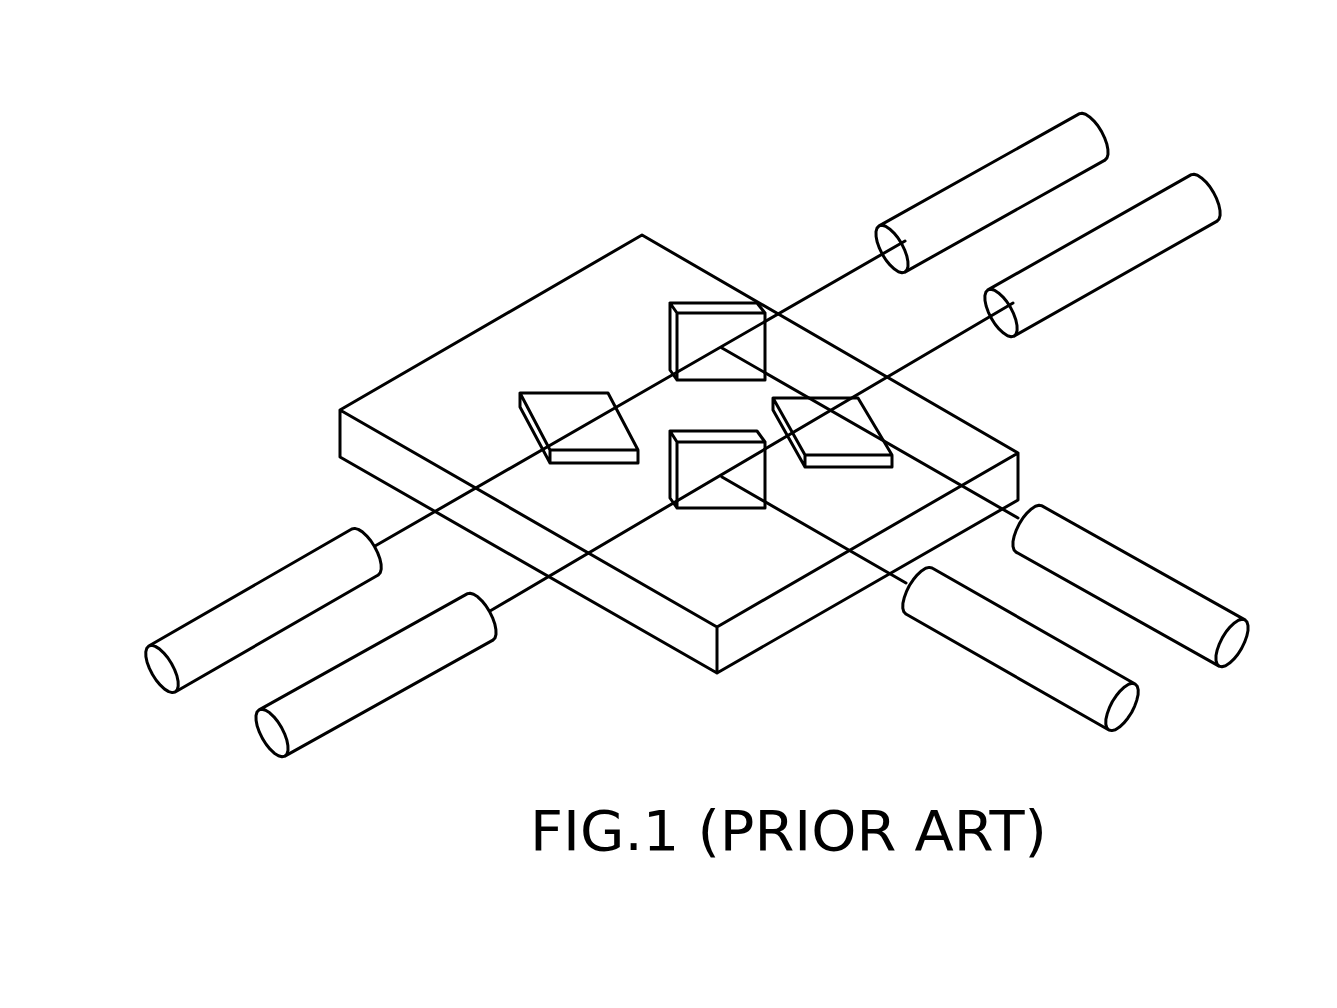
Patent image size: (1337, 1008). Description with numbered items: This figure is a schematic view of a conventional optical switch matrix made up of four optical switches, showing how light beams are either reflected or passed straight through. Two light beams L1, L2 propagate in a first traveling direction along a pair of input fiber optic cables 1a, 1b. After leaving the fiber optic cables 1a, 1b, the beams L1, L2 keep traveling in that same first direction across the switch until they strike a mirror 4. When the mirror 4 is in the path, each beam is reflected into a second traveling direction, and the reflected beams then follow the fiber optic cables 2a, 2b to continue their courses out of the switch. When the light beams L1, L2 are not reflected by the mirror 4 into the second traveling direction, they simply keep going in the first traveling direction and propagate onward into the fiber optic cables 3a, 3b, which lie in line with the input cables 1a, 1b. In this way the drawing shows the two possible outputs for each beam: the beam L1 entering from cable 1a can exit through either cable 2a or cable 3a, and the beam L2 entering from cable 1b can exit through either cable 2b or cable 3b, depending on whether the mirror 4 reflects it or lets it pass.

The fiber optic cable 1a is at (197, 618).
The fiber optic cable 1b is at (333, 727).
The fiber optic cable 2a is at (1028, 683).
The fiber optic cable 2b is at (1205, 597).
The fiber optic cable 3a is at (1082, 297).
The fiber optic cable 3b is at (932, 197).
The mirror 4 is at (713, 303).
The light beam L1 is at (397, 530).
The light beam L2 is at (508, 598).